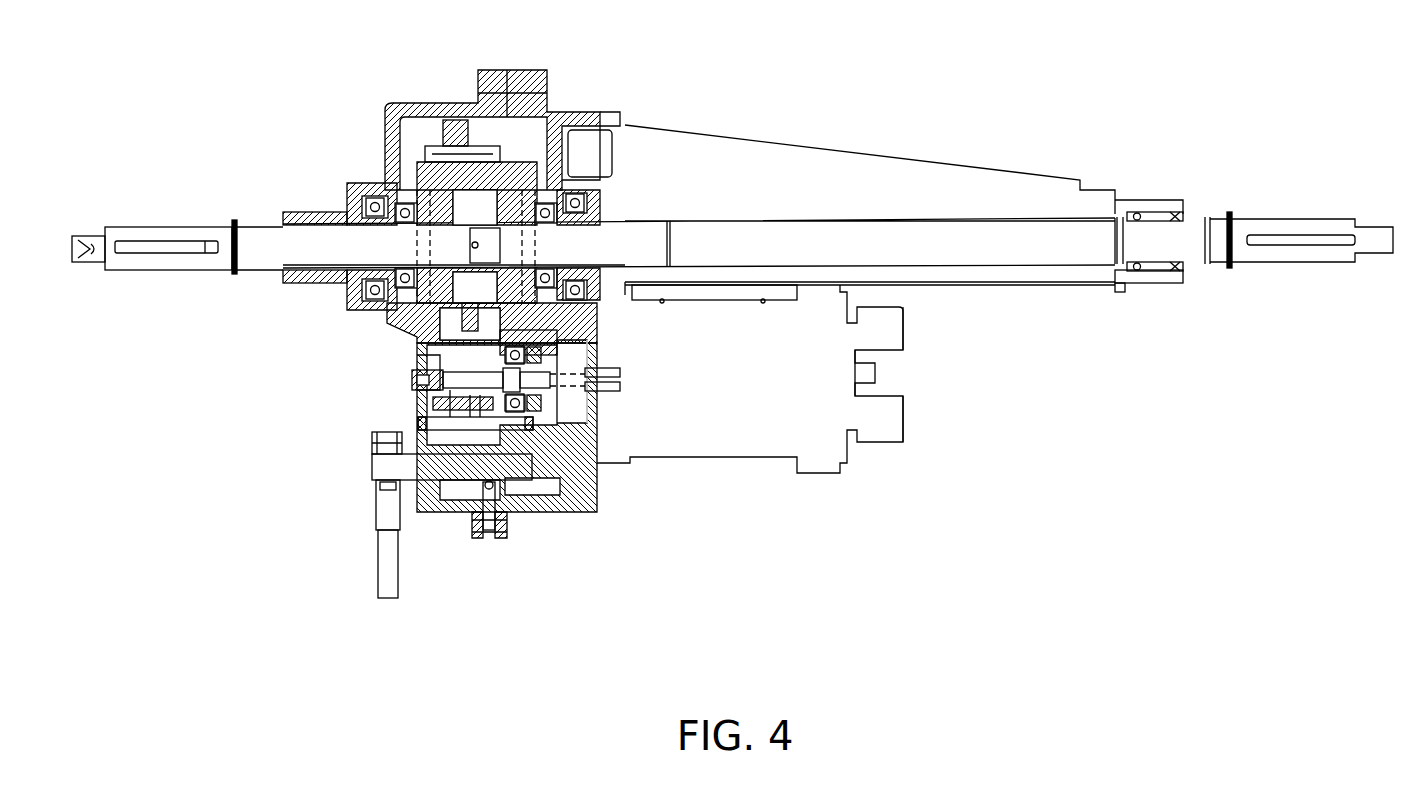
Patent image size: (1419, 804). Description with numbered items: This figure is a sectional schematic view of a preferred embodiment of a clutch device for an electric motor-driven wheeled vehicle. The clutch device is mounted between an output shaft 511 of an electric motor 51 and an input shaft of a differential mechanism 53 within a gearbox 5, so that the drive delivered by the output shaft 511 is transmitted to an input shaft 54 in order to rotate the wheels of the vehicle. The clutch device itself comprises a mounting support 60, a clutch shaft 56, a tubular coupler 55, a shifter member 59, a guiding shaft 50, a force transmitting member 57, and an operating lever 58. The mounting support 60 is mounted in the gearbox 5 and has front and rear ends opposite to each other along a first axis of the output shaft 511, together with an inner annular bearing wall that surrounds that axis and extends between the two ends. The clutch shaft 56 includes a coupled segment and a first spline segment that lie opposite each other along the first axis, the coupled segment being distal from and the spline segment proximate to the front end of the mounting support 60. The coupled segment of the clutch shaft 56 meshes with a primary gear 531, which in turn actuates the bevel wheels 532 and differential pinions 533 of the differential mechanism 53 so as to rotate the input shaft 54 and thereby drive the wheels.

The gearbox 5 is at (398, 98).
The guiding shaft 50 is at (523, 432).
The electric motor 51 is at (732, 460).
The output shaft 511 is at (617, 382).
The differential mechanism 53 is at (402, 318).
The primary gear 531 is at (437, 357).
The bevel wheels 532 is at (432, 200).
The differential pinions 533 is at (425, 272).
The input shaft 54 is at (262, 273).
The tubular coupler 55 is at (568, 406).
The clutch shaft 56 is at (415, 378).
The force transmitting member 57 is at (461, 482).
The operating lever 58 is at (378, 546).
The shifter member 59 is at (452, 404).
The mounting support 60 is at (885, 445).